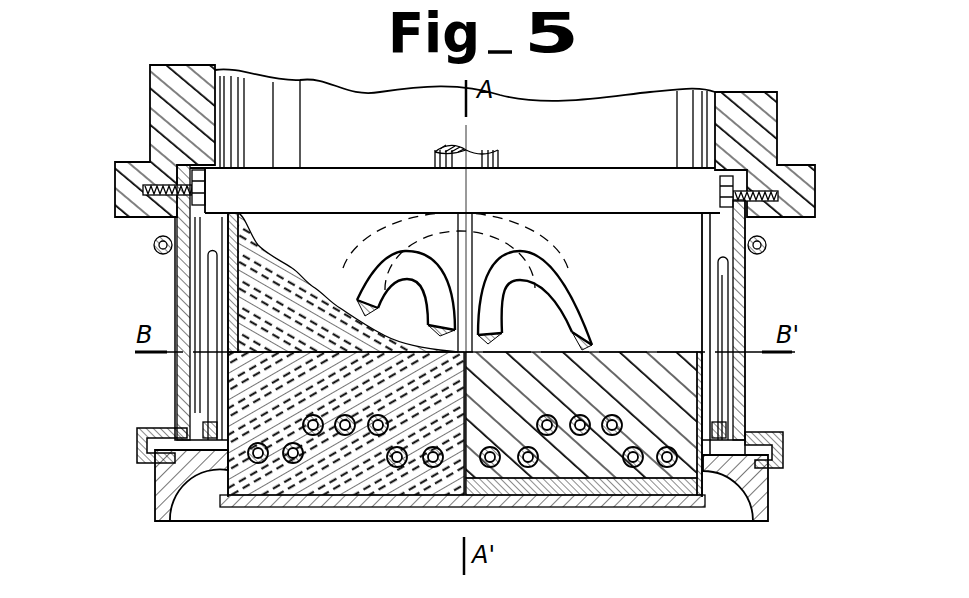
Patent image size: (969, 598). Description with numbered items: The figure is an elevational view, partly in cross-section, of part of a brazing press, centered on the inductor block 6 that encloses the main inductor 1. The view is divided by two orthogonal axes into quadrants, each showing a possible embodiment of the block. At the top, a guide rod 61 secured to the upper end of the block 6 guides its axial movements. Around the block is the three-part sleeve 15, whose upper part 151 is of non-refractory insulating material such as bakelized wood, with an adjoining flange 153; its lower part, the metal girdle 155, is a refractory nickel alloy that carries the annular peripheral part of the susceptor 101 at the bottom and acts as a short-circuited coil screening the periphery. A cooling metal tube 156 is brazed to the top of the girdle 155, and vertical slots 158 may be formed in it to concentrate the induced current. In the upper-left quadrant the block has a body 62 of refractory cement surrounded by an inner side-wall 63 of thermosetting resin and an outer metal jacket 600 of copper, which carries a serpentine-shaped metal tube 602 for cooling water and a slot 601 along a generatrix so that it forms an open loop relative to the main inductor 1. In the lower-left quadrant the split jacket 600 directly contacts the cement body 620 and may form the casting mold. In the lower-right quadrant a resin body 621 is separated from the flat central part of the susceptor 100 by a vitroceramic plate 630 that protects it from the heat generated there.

The main inductor 1 is at (308, 446).
The inductor block 6 is at (580, 211).
The sleeve 15 is at (157, 254).
The guide rod 61 is at (445, 153).
The body 62 is at (248, 214).
The side-wall 63 is at (236, 207).
The flat central part of the susceptor 100 is at (398, 508).
The annular peripheral part of the susceptor 101 is at (762, 494).
The upper part 151 is at (776, 100).
The flange 153 is at (812, 178).
The metal girdle 155 is at (176, 420).
The metal tube 156 is at (768, 245).
The vertical slots 158 is at (740, 268).
The metal jacket 600 is at (622, 233).
The slot 601 is at (473, 226).
The serpentine-shaped metal tube 602 is at (432, 246).
The body 620 is at (307, 482).
The resin body 621 is at (640, 366).
The plate 630 is at (633, 479).